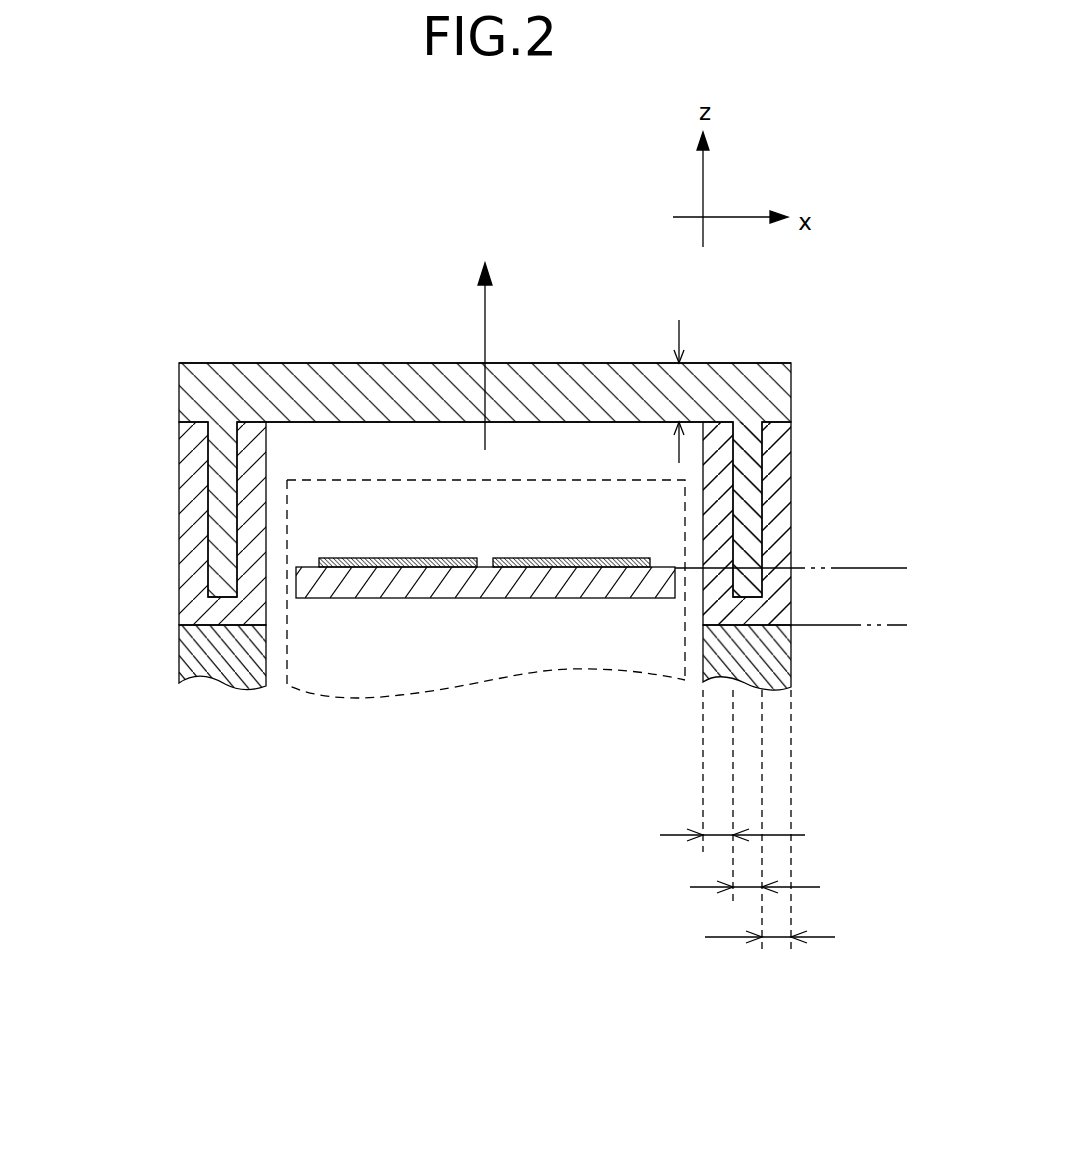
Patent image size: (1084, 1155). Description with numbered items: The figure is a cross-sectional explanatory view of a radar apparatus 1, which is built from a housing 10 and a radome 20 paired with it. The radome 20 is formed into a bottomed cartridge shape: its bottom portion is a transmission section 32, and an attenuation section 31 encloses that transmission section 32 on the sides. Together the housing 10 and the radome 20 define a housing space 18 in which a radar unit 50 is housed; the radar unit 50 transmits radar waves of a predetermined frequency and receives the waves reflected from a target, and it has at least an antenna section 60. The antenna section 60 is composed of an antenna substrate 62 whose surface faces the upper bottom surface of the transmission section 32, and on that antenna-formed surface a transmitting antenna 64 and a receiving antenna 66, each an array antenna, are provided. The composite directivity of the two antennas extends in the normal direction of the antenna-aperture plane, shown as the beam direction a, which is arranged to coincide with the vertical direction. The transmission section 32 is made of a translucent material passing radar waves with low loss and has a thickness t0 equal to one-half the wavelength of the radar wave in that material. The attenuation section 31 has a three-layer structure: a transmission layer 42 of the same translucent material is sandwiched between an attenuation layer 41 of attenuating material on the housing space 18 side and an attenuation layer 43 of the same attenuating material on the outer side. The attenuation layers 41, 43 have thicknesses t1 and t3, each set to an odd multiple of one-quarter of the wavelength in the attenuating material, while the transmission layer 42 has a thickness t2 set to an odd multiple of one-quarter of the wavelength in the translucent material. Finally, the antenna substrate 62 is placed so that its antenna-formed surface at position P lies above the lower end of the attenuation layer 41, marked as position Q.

The radar apparatus 1 is at (143, 300).
The housing 10 is at (180, 653).
The housing space 18 is at (623, 422).
The radome 20 is at (434, 436).
The attenuation section 31 is at (549, 523).
The transmission section 32 is at (298, 363).
The attenuation layer 41 is at (715, 498).
The transmission layer 42 is at (743, 522).
The attenuation layer 43 is at (868, 437).
The radar unit 50 is at (380, 478).
The antenna section 60 is at (485, 576).
The antenna substrate 62 is at (565, 598).
The transmitting antenna 64 is at (417, 558).
The receiving antenna 66 is at (557, 558).
The beam direction a is at (485, 336).
The thickness of transmission section t0 is at (680, 385).
The thickness of attenuation layer 41 t1 is at (718, 833).
The thickness of transmission layer t2 is at (747, 886).
The thickness of attenuation layer 43 t3 is at (777, 936).
The position P is at (801, 569).
The position Q is at (861, 625).